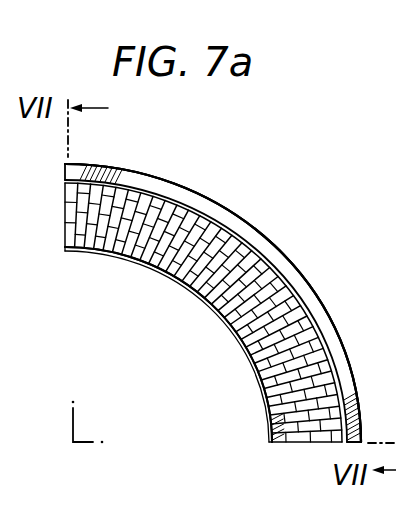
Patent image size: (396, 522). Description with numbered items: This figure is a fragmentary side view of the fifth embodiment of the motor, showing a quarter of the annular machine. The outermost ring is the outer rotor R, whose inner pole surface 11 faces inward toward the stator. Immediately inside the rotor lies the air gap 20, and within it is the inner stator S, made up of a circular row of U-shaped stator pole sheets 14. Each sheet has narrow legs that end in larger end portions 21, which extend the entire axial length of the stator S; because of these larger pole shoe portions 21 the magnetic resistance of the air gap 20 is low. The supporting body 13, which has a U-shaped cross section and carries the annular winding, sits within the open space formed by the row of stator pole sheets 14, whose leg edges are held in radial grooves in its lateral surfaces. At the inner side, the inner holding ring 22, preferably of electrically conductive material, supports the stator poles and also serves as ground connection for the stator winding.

The inner pole surface 11 is at (165, 183).
The air gap 20 is at (262, 244).
The end portions 21 is at (305, 293).
The stator pole sheets 14 is at (237, 344).
The inner holding ring 22 is at (272, 420).
The inner stator S is at (226, 324).
The outer rotor R is at (342, 334).
The supporting body 13 is at (149, 300).